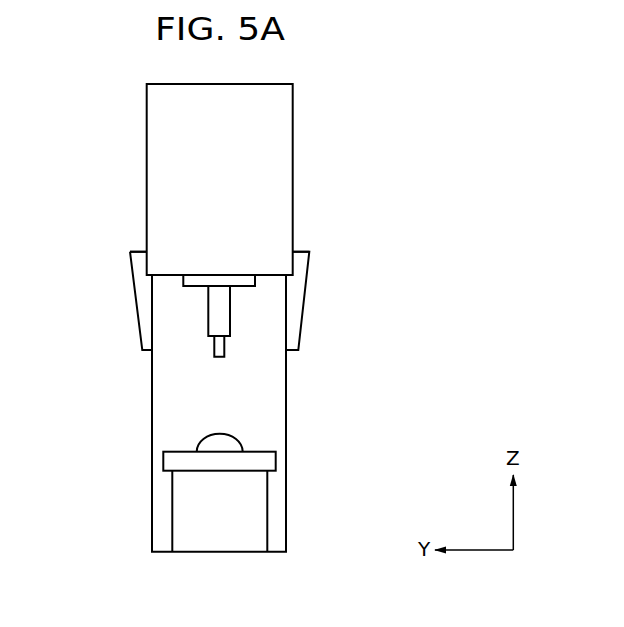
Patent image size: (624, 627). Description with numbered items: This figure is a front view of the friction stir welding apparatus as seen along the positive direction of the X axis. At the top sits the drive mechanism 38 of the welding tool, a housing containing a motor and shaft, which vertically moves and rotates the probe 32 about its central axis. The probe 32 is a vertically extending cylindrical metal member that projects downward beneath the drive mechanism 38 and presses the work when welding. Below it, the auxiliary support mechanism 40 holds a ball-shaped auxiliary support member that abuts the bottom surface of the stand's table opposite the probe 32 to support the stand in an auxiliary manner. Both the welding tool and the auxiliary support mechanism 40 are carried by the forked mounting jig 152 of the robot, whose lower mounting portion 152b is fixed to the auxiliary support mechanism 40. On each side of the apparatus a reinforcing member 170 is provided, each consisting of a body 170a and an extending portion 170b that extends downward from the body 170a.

The drive mechanism 38 is at (125, 119).
The probe 32 is at (181, 355).
The auxiliary support mechanism 40 is at (160, 512).
The mounting jig 152 is at (317, 417).
The lower mounting portion 152b is at (275, 435).
The reinforcing member 170 is at (120, 266).
The body 170a is at (130, 251).
The extending portion 170b is at (140, 323).